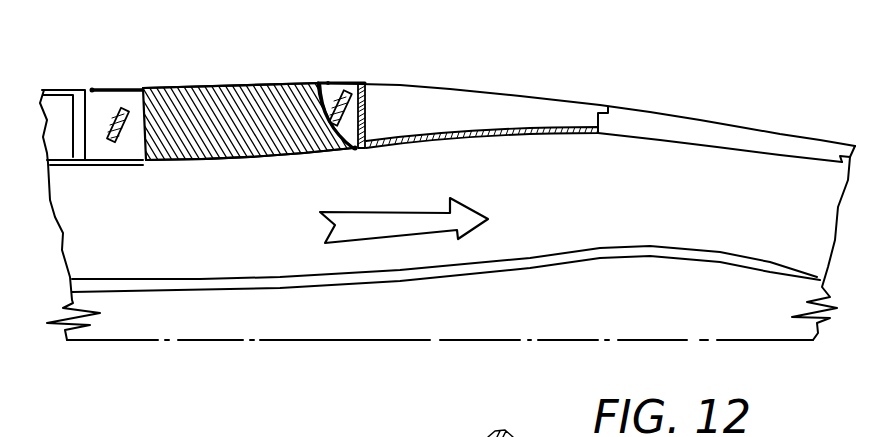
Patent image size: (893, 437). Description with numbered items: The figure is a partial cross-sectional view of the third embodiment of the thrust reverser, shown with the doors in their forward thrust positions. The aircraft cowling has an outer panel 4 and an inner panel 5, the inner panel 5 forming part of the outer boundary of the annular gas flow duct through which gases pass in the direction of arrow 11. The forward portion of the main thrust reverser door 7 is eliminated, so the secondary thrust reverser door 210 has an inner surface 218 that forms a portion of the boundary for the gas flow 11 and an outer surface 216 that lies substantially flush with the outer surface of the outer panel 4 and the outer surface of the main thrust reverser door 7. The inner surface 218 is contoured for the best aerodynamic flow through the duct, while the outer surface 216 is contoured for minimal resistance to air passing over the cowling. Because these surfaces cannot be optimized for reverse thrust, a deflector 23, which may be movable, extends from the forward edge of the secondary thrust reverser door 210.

The outer panel 4 is at (63, 90).
The inner panel 5 is at (115, 165).
The main thrust reverser door 7 is at (533, 118).
The gas flow direction arrow 11 is at (352, 233).
The deflector 23 is at (123, 107).
The secondary thrust reverser door 210 is at (287, 103).
The outer surface 216 is at (217, 87).
The inner surface 218 is at (198, 161).